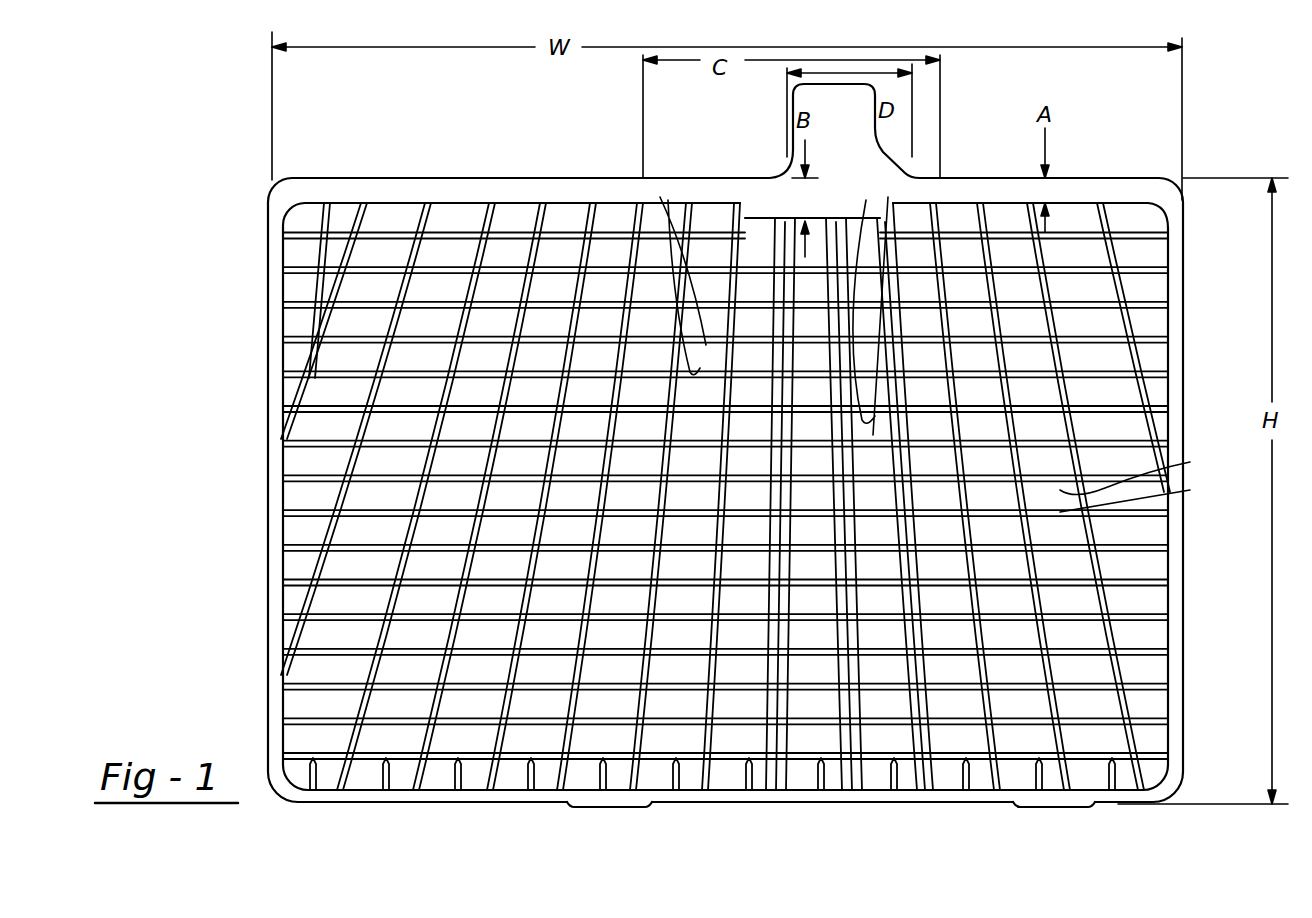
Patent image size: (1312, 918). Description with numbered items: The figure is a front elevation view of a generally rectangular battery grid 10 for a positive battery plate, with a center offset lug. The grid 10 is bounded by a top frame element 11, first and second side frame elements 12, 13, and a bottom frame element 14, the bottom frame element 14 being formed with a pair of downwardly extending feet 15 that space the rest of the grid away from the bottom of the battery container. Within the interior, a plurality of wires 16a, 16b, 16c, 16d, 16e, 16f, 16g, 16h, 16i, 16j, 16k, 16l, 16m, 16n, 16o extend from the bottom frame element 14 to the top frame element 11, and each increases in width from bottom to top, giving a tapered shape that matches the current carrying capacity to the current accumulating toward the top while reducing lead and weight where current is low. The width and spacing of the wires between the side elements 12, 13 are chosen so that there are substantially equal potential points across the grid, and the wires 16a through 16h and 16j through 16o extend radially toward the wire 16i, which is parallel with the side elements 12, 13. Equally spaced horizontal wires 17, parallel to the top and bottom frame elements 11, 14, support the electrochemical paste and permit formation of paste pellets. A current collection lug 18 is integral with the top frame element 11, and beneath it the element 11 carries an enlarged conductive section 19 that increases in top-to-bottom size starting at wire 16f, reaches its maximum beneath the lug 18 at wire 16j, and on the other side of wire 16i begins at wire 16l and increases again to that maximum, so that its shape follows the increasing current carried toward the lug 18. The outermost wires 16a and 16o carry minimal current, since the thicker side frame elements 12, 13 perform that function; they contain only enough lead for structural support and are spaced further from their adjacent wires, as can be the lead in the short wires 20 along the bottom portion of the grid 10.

The battery grid 10 is at (1208, 158).
The top frame element 11 is at (488, 192).
The first side frame element 12 is at (272, 345).
The second side frame element 13 is at (1181, 342).
The bottom frame element 14 is at (505, 798).
The feet 15 is at (606, 804).
The wire 16a is at (328, 290).
The wire 16b is at (340, 500).
The wire 16c is at (456, 568).
The wire 16d is at (480, 595).
The wire 16e is at (455, 572).
The wire 16f is at (600, 462).
The wire 16g is at (650, 745).
The wire 16h is at (720, 742).
The wire 16i is at (775, 700).
The wire 16j is at (860, 740).
The wire 16k is at (930, 740).
The wire 16l is at (1007, 704).
The wire 16m is at (1050, 572).
The wire 16n is at (1107, 538).
The wire 16o is at (1142, 290).
The horizontal wires 17 is at (1188, 468).
The current collection lug 18 is at (840, 110).
The enlarged conductive section 19 is at (866, 176).
The short wires 20 is at (393, 780).